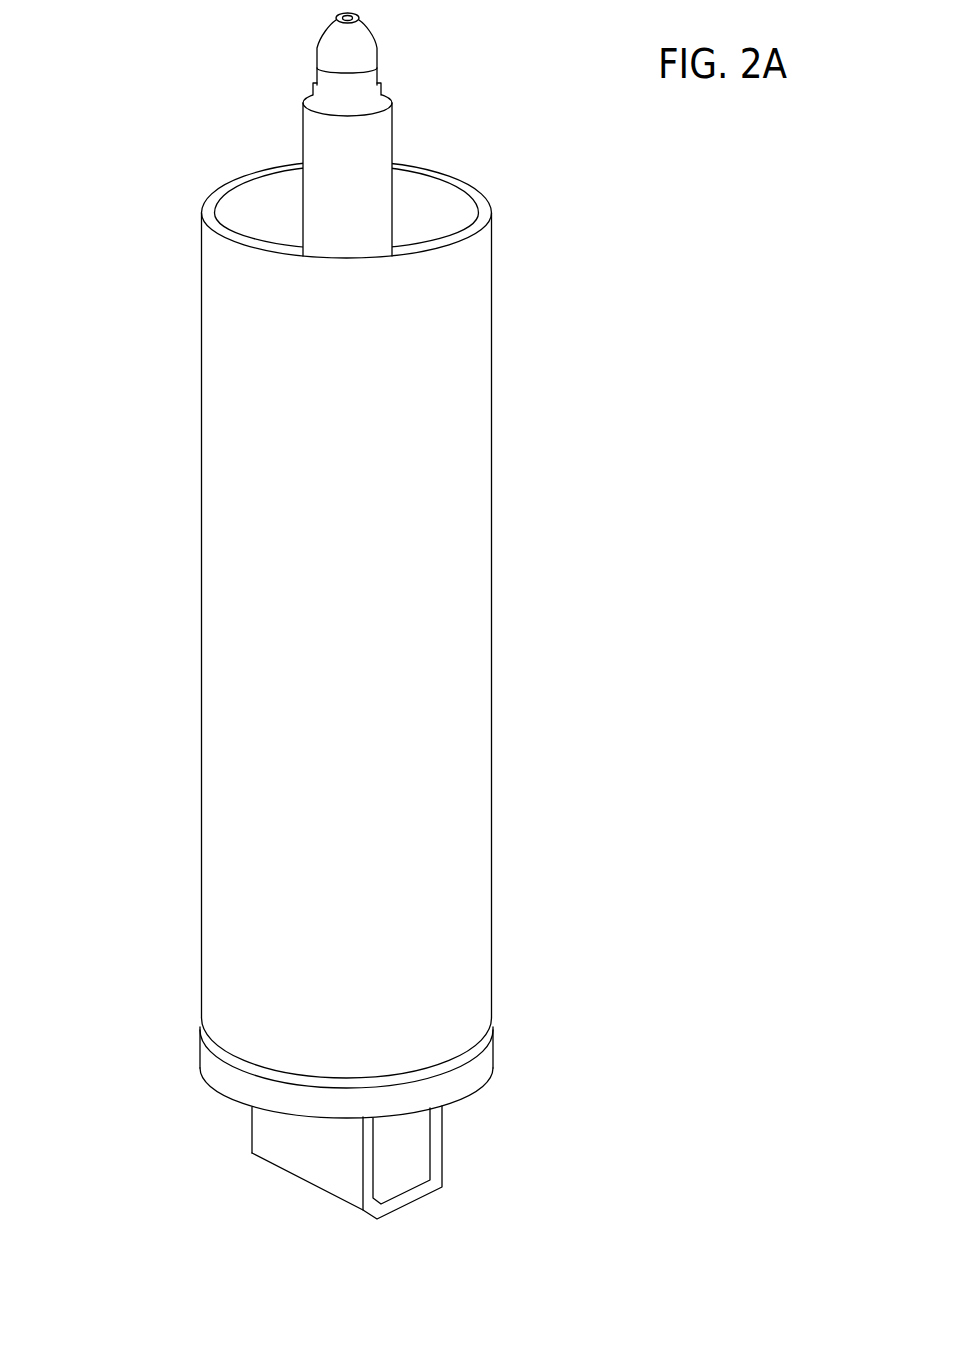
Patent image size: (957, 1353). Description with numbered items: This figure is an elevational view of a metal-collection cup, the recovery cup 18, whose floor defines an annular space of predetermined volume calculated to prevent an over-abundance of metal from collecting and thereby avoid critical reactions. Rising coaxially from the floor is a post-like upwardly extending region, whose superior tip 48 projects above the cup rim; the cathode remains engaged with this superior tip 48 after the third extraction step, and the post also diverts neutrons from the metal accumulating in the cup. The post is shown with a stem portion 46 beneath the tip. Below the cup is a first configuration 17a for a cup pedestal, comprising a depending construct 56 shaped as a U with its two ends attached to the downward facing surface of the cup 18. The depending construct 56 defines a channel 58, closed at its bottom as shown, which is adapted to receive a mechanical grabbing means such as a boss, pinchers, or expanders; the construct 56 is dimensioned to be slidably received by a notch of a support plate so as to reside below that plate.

The recovery cup 18 is at (346, 639).
The stem / neck 46 is at (313, 144).
The superior tip 48 is at (370, 33).
The first configuration 17a is at (312, 1159).
The depending construct 56 is at (325, 1186).
The channel 58 is at (407, 1150).